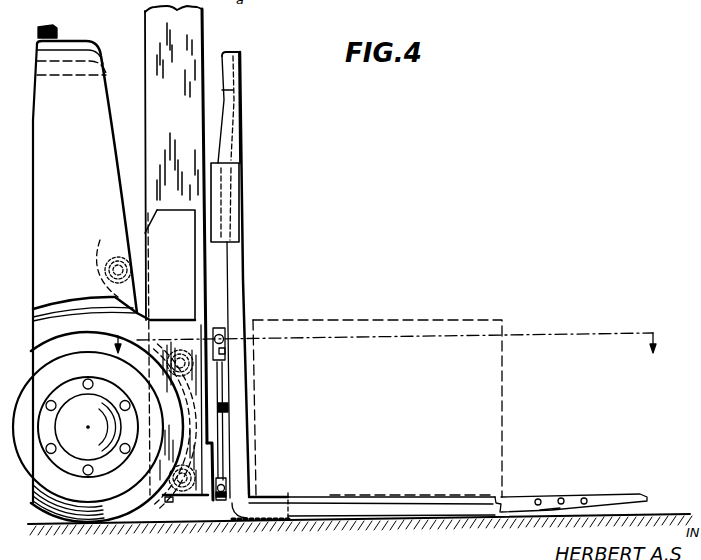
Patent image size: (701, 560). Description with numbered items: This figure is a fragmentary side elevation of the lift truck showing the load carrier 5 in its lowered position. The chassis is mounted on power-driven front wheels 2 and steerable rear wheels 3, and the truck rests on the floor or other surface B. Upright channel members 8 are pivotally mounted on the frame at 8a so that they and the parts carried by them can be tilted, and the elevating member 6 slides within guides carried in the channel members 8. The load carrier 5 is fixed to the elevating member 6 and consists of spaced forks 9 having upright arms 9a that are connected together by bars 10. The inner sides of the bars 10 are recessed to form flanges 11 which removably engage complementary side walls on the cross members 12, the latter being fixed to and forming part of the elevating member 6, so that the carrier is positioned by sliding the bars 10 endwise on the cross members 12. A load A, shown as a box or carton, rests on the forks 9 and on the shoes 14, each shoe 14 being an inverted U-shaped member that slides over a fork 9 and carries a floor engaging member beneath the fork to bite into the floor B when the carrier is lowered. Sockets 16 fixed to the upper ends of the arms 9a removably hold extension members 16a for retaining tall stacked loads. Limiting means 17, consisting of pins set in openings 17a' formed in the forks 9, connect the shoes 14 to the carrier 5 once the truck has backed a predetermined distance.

The front wheels 2 is at (100, 523).
The rear wheels 3 is at (376, 352).
The load carrier 5 is at (531, 476).
The elevating member 6 is at (212, 381).
The channel members 8 is at (147, 27).
The pivotal mounting 8a is at (113, 257).
The forks 9 is at (405, 505).
The upright arms 9a is at (235, 278).
The bars 10 is at (214, 340).
The flanges 11 is at (221, 360).
The cross members 12 is at (222, 397).
The shoes 14 is at (279, 497).
The sockets 16 is at (230, 213).
The extension members 16a is at (227, 90).
The limiting means 17 is at (550, 506).
The openings 17a' is at (561, 485).
The load A is at (467, 390).
The floor B is at (157, 524).